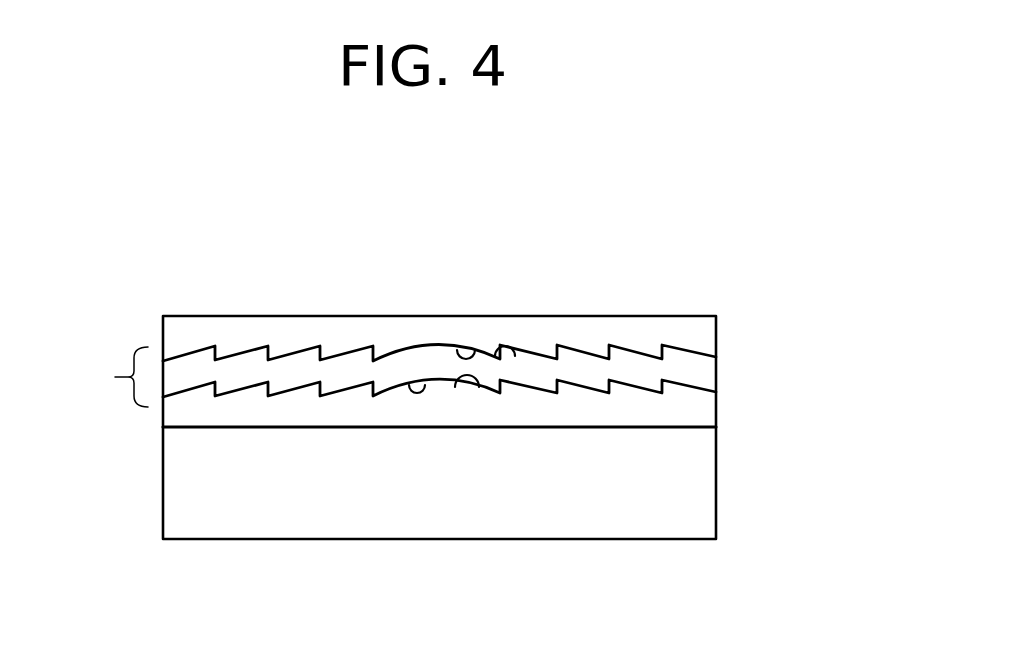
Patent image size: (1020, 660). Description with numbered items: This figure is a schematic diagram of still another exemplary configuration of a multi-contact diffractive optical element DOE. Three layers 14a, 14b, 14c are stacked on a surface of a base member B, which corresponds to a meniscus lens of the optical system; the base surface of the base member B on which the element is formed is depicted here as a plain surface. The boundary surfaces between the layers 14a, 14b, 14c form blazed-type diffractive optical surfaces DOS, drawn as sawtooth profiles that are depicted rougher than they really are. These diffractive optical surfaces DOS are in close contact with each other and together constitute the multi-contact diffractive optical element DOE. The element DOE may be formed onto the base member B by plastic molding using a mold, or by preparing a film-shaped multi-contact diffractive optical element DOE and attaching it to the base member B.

The first layer 14a is at (718, 413).
The second layer 14b is at (718, 377).
The third layer 14c is at (718, 327).
The base member B is at (718, 475).
The multi-contact diffractive optical element DOE is at (497, 322).
The diffractive optical surface DOS is at (408, 385).